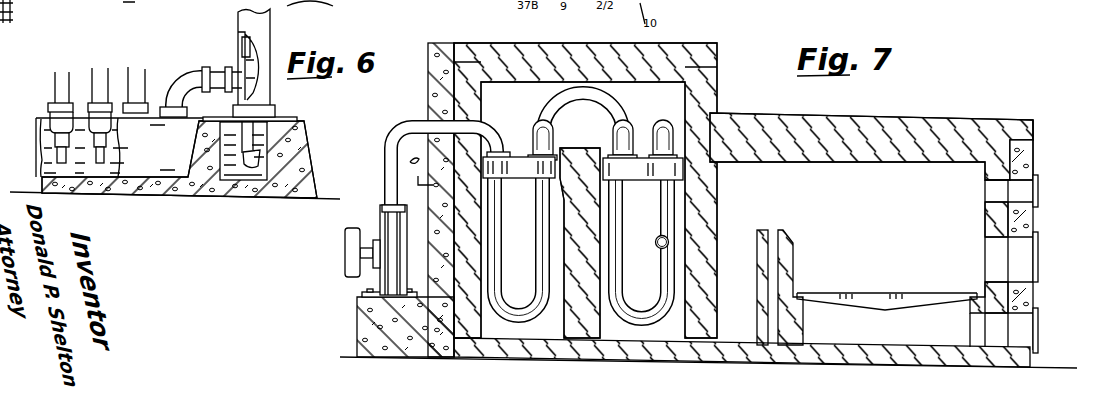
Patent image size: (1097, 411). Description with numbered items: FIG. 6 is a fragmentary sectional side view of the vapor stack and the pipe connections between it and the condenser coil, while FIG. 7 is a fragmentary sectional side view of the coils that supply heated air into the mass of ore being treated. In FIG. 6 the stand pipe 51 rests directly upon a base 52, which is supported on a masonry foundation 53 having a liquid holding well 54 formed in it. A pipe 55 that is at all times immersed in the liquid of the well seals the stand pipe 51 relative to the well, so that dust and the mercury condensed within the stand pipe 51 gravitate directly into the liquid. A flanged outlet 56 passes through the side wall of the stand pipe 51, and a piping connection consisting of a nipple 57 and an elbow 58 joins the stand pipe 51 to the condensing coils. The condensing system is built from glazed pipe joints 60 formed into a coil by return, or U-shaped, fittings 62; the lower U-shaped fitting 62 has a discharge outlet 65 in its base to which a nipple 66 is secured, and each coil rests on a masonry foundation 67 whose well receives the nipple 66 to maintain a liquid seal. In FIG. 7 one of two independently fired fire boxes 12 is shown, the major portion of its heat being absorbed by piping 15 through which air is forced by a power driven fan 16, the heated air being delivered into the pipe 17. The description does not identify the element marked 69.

In FIG. 7, the fire box 12 is at (900, 173).
In FIG. 7, the piping 15 is at (615, 112).
In FIG. 7, the power driven fan 16 is at (390, 270).
In FIG. 7, the pipe 17 is at (669, 240).
In FIG. 6, the stand pipe 51 is at (271, 30).
In FIG. 6, the base 52 is at (295, 118).
In FIG. 6, the masonry foundation 53 is at (300, 148).
In FIG. 6, the liquid holding well 54 is at (283, 167).
In FIG. 6, the pipe 55 is at (249, 168).
In FIG. 6, the flanged outlet 56 is at (238, 55).
In FIG. 6, the nipple 57 is at (215, 66).
In FIG. 6, the elbow 58 is at (173, 79).
In FIG. 6, the glazed pipe joint 60 is at (83, 160).
In FIG. 6, the U-shaped fitting 62 is at (117, 134).
In FIG. 6, the discharge outlet 65 is at (113, 151).
In FIG. 6, the nipple 66 is at (110, 168).
In FIG. 6, the masonry foundation 67 is at (195, 118).
In FIG. 6, the electrode rods 69 is at (128, 100).